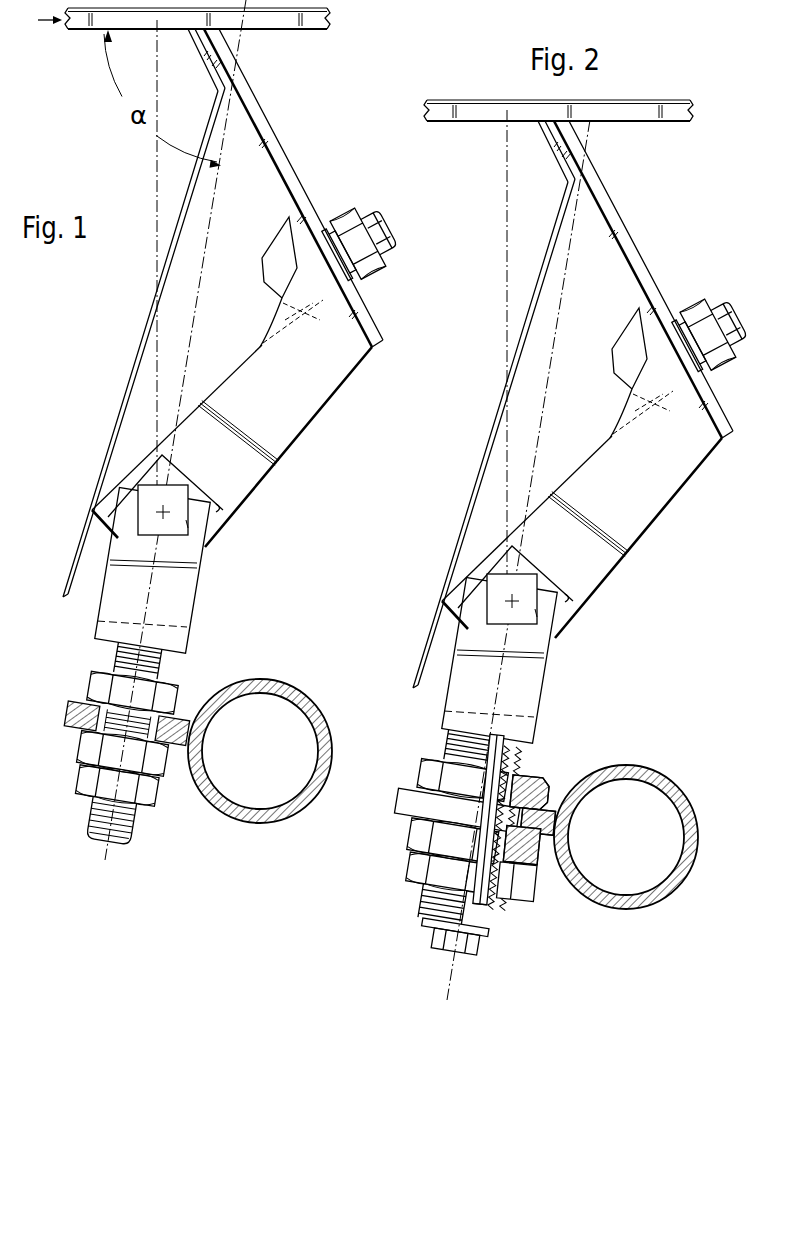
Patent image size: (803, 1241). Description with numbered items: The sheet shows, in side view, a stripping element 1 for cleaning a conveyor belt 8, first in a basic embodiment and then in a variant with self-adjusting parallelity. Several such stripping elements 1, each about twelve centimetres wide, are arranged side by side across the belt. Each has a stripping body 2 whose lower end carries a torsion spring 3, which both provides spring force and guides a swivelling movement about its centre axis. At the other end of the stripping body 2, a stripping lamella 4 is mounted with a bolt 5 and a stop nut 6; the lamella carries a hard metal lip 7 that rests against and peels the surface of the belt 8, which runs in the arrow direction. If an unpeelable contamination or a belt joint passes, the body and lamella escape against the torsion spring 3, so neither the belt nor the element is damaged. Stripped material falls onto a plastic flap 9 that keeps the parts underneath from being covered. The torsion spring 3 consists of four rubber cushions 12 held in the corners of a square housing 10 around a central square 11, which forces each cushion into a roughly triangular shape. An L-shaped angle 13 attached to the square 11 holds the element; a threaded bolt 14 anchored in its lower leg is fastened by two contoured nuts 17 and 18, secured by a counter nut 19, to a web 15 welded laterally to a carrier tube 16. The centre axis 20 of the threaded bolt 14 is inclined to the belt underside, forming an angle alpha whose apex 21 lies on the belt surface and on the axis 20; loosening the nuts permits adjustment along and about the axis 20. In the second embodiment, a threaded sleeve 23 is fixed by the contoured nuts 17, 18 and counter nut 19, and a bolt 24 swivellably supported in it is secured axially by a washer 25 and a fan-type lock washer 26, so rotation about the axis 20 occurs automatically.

In FIG. 1, the stripping element 1 is at (320, 453).
In FIG. 2, the stripping element 1 is at (707, 561).
In FIG. 1, the stripping body 2 is at (333, 377).
In FIG. 2, the stripping body 2 is at (582, 473).
In FIG. 1, the torsion spring 3 is at (132, 458).
In FIG. 2, the torsion spring 3 is at (515, 577).
In FIG. 1, the stripping lamella 4 is at (254, 118).
In FIG. 2, the stripping lamella 4 is at (643, 279).
In FIG. 1, the bolt 5 is at (380, 213).
In FIG. 2, the bolt 5 is at (729, 299).
In FIG. 1, the stop nut 6 is at (347, 217).
In FIG. 2, the stop nut 6 is at (701, 315).
In FIG. 1, the hard metal lip 7 is at (202, 47).
In FIG. 2, the hard metal lip 7 is at (542, 151).
In FIG. 1, the belt 8 is at (313, 32).
In FIG. 2, the belt 8 is at (558, 137).
In FIG. 1, the flap 9 is at (140, 350).
In FIG. 2, the flap 9 is at (494, 433).
In FIG. 1, the square housing 10 is at (218, 512).
In FIG. 2, the square housing 10 is at (589, 630).
In FIG. 1, the square 11 is at (182, 523).
In FIG. 2, the square 11 is at (560, 644).
In FIG. 1, the rubber cushions 12 is at (175, 478).
In FIG. 2, the rubber cushions 12 is at (532, 562).
In FIG. 1, the L-shaped angle 13 is at (107, 603).
In FIG. 2, the L-shaped angle 13 is at (521, 660).
In FIG. 1, the threaded bolt 14 is at (92, 808).
In FIG. 2, the threaded bolt 14 is at (455, 827).
In FIG. 1, the web 15 is at (78, 700).
In FIG. 2, the web 15 is at (402, 800).
In FIG. 1, the tube 16 is at (258, 678).
In FIG. 2, the tube 16 is at (623, 770).
In FIG. 1, the contoured nut 17 is at (173, 700).
In FIG. 2, the contoured nut 17 is at (422, 777).
In FIG. 1, the contoured nut 18 is at (87, 742).
In FIG. 2, the contoured nut 18 is at (412, 832).
In FIG. 1, the counter nut 19 is at (78, 768).
In FIG. 2, the counter nut 19 is at (408, 867).
In FIG. 1, the centre axis 20 is at (232, 205).
In FIG. 2, the centre axis 20 is at (535, 560).
In FIG. 1, the apex 21 is at (240, 32).
In FIG. 2, the apex 21 is at (607, 152).
In FIG. 2, the threaded sleeve 23 is at (503, 902).
In FIG. 2, the bolt 24 is at (487, 928).
In FIG. 2, the washer 25 is at (427, 923).
In FIG. 2, the fan-type lock washer 26 is at (430, 937).